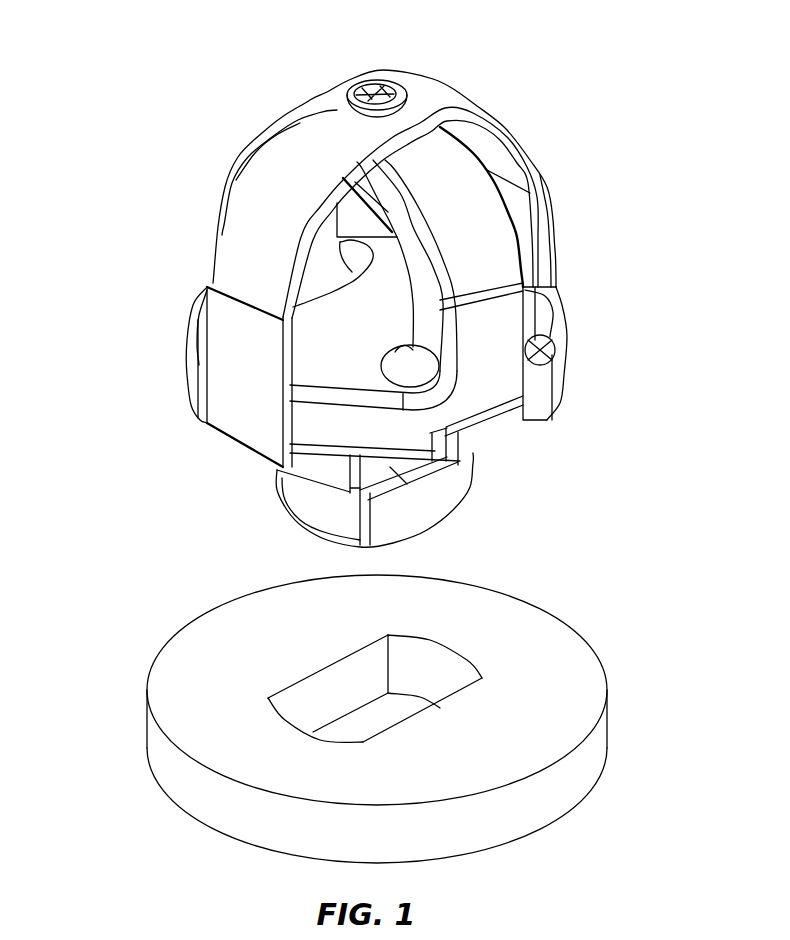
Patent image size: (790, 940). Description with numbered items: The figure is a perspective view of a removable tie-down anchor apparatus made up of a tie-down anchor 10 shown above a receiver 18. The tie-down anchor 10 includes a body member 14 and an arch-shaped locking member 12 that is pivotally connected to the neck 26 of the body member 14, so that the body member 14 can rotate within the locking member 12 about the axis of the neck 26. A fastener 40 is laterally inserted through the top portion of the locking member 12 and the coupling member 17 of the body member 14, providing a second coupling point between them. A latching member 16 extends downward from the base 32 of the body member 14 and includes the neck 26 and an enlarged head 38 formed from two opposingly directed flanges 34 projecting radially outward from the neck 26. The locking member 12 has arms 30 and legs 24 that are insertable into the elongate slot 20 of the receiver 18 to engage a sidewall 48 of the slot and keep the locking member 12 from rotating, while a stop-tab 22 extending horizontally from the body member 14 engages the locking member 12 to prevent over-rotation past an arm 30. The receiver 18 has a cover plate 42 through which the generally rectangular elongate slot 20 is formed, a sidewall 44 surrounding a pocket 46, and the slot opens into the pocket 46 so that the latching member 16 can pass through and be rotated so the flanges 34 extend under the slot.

The tie-down anchor 10 is at (205, 99).
The locking member 12 is at (213, 232).
The body member 14 is at (493, 425).
The latching member 16 is at (322, 542).
The coupling member 17 is at (492, 225).
The receiver 18 is at (152, 638).
The elongate slot 20 is at (273, 710).
The stop-tab 22 is at (543, 288).
The leg 24 is at (335, 478).
The neck 26 is at (410, 484).
The arm 30 is at (233, 370).
The base 32 is at (493, 397).
The flange 34 is at (322, 522).
The enlarged head 38 is at (432, 522).
The fastener 40 is at (365, 84).
The cover plate 42 is at (170, 690).
The sidewall 44 is at (180, 780).
The pocket 46 is at (400, 707).
The sidewall of the elongate slot 48 is at (323, 687).